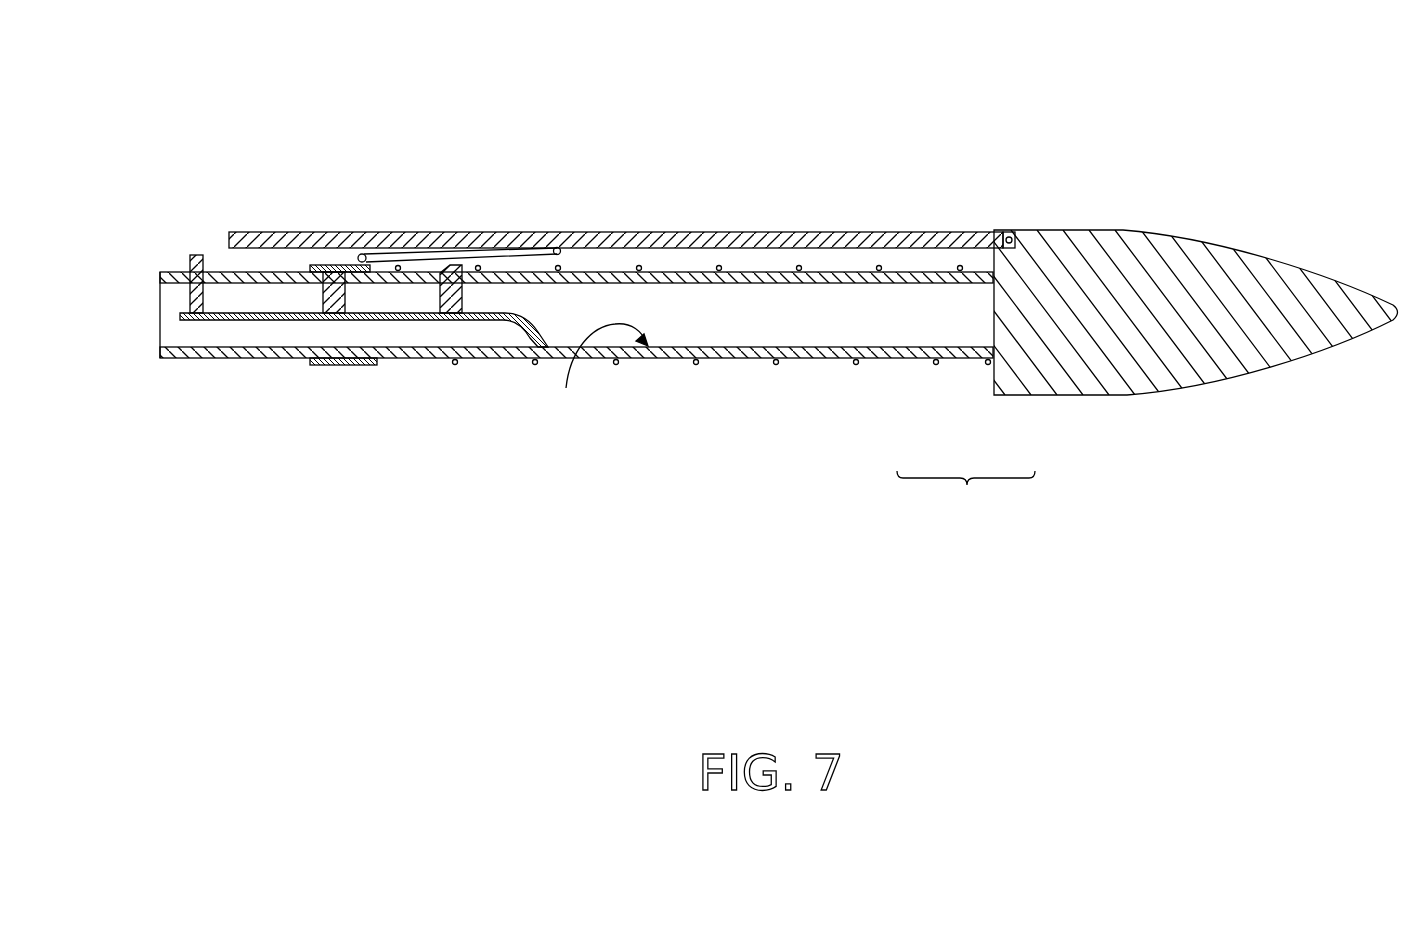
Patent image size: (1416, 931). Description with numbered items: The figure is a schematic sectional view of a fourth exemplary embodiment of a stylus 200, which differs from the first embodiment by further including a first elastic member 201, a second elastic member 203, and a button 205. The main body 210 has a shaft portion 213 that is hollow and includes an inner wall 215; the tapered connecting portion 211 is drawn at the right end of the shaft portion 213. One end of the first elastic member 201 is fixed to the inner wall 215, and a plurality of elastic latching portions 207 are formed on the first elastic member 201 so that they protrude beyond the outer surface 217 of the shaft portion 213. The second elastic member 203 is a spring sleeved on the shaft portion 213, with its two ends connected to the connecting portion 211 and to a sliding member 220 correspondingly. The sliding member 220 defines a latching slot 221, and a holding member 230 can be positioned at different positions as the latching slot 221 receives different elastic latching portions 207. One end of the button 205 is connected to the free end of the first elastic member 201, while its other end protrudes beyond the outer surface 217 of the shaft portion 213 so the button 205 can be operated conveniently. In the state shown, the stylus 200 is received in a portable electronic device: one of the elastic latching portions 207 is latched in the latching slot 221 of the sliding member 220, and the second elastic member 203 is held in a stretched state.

The stylus 200 is at (623, 84).
The first elastic member 201 is at (250, 321).
The second elastic member 203 is at (455, 359).
The button 205 is at (197, 254).
The elastic latching portions 207 is at (325, 265).
The main body 210 is at (966, 500).
The connecting portion 211 is at (1057, 375).
The shaft portion 213 is at (903, 359).
The inner wall 215 is at (596, 375).
The outer surface 217 is at (172, 266).
The sliding member 220 is at (337, 366).
The latching slot 221 is at (344, 262).
The holding member 230 is at (598, 231).